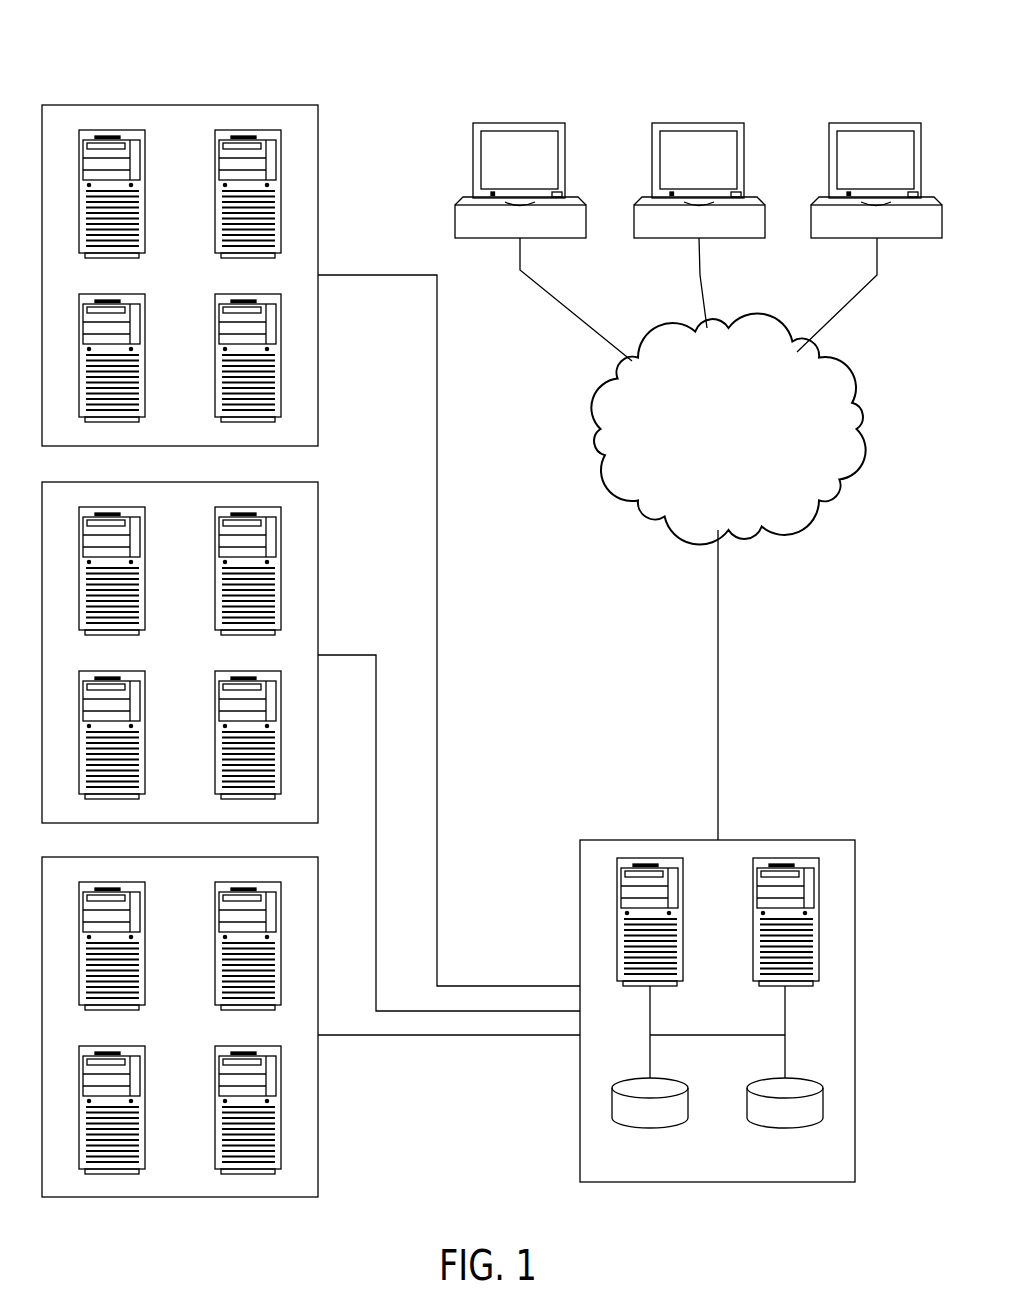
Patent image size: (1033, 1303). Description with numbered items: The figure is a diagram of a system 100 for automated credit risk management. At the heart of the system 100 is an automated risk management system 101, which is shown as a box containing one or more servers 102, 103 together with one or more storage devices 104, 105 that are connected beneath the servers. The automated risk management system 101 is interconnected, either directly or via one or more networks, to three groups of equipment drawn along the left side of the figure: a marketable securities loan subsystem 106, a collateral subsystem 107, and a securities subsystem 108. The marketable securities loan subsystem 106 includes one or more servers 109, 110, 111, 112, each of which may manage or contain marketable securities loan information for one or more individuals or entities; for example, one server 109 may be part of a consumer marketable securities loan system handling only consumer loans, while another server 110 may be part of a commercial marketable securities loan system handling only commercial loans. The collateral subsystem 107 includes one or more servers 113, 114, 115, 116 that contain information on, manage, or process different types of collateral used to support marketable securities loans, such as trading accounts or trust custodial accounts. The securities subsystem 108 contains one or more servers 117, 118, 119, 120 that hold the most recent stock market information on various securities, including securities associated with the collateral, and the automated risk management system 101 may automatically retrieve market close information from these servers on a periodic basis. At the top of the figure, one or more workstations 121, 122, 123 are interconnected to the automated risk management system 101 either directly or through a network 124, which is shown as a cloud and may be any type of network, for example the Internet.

The system 100 is at (296, 63).
The automated risk management system 101 is at (798, 840).
The server 102 is at (683, 967).
The server 103 is at (753, 872).
The storage device 104 is at (622, 1128).
The storage device 105 is at (757, 1128).
The marketable securities loan subsystem 106 is at (318, 171).
The collateral subsystem 107 is at (318, 538).
The securities subsystem 108 is at (318, 1113).
The server 109 is at (146, 242).
The server 110 is at (215, 149).
The server 111 is at (215, 317).
The server 112 is at (146, 410).
The server 113 is at (146, 619).
The server 114 is at (215, 526).
The server 115 is at (215, 694).
The server 116 is at (146, 787).
The server 117 is at (146, 994).
The server 118 is at (215, 901).
The server 119 is at (146, 1162).
The server 120 is at (215, 1069).
The workstation 121 is at (520, 123).
The workstation 122 is at (699, 123).
The workstation 123 is at (876, 123).
The network 124 is at (777, 531).